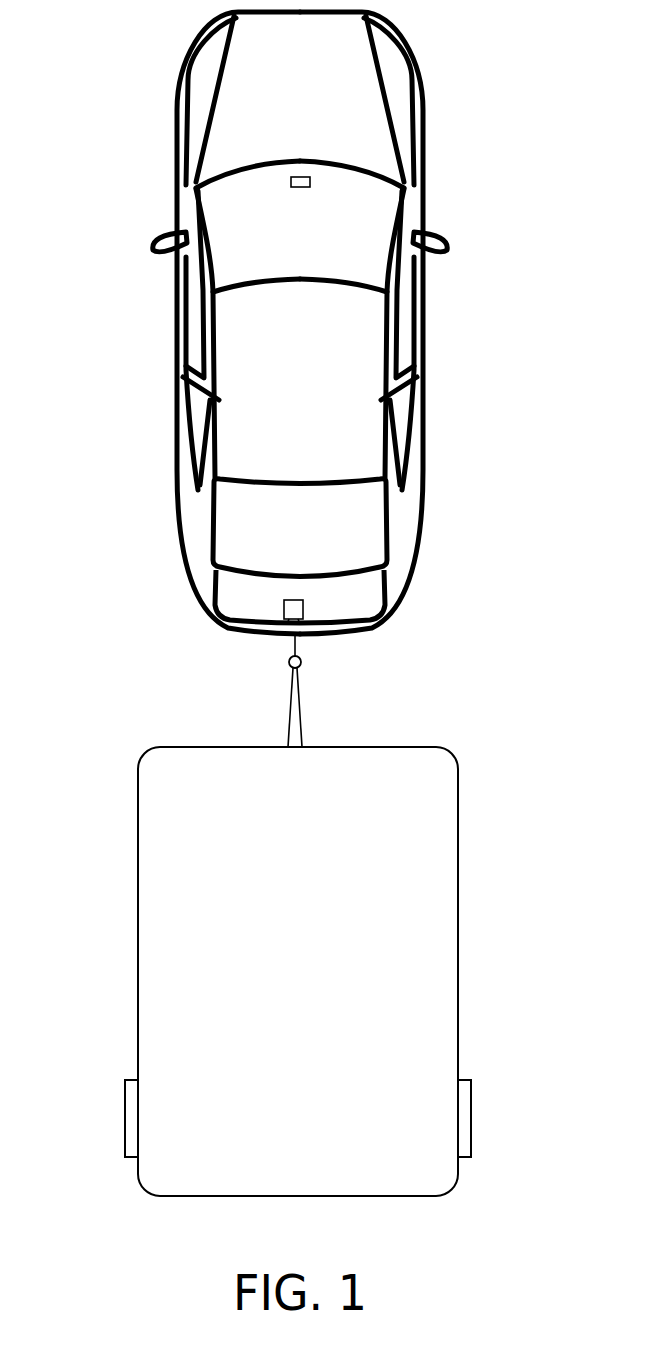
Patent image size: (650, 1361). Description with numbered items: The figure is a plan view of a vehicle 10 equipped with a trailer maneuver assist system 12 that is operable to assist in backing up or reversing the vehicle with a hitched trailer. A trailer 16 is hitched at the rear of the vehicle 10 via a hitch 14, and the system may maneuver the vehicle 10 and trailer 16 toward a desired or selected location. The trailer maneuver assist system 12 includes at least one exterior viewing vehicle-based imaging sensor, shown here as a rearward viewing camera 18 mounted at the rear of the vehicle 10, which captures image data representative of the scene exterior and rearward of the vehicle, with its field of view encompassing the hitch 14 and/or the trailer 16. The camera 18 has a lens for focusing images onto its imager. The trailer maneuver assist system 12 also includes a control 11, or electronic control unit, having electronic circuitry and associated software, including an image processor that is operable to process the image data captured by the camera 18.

The vehicle 10 is at (449, 100).
The control 11 is at (311, 182).
The trailer maneuver assist system 12 is at (122, 588).
The hitch 14 is at (302, 663).
The trailer 16 is at (163, 774).
The rearward viewing camera 18 is at (304, 612).